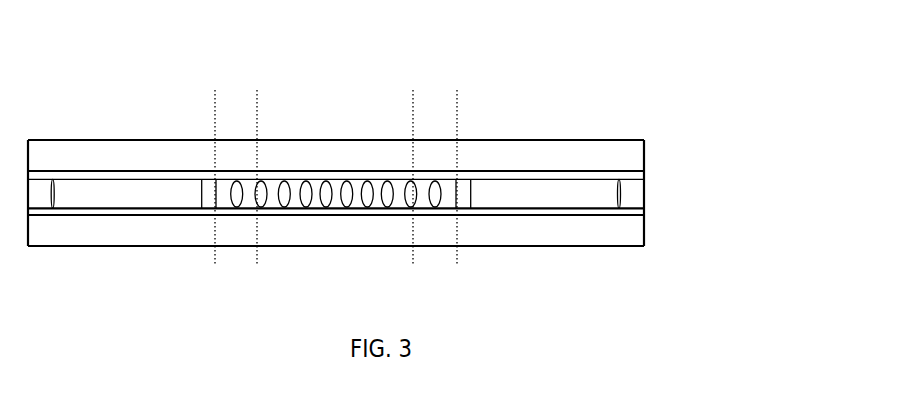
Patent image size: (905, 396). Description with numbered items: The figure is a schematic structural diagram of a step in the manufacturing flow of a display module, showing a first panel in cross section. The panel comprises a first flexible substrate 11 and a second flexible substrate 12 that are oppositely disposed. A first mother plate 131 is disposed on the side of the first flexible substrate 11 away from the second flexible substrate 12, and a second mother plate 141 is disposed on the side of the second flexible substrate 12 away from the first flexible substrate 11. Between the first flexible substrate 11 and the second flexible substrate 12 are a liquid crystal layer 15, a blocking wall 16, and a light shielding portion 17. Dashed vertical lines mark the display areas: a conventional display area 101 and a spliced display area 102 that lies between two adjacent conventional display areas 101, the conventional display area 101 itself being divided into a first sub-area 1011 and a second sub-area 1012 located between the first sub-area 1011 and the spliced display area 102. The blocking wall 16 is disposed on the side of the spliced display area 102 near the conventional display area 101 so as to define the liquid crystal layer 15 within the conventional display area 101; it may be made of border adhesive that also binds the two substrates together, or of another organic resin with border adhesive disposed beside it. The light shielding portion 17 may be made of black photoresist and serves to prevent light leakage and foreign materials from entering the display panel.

The conventional display area 101 is at (320, 33).
The first sub-area 1011 is at (400, 103).
The second sub-area 1012 is at (447, 103).
The spliced display area 102 is at (483, 107).
The first mother plate 131 is at (644, 149).
The first flexible substrate 11 is at (644, 172).
The second flexible substrate 12 is at (644, 212).
The second mother plate 141 is at (644, 231).
The liquid crystal layer 15 is at (306, 183).
The blocking wall 16 is at (465, 195).
The light shielding portion 17 is at (630, 195).